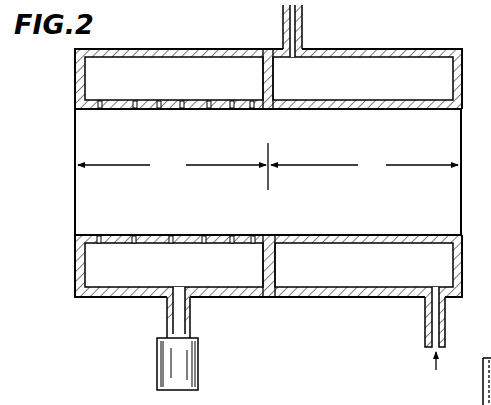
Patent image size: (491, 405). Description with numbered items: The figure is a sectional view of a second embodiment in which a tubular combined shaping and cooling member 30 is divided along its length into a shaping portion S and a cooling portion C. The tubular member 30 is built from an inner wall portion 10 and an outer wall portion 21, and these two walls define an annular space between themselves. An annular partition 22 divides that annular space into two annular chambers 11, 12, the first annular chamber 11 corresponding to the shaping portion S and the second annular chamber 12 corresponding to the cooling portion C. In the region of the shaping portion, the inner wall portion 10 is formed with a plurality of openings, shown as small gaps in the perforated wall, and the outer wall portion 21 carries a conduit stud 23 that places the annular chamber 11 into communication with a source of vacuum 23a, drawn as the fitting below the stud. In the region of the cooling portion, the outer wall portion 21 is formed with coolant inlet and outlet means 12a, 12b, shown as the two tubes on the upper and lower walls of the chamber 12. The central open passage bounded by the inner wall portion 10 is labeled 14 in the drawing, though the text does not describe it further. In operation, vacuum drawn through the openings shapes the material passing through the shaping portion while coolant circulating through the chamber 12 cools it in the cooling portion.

The inner wall portion 10 is at (174, 108).
The annular chamber 11 is at (177, 71).
The annular chamber 12 is at (366, 70).
The coolant inlet and outlet means 12a is at (428, 325).
The coolant inlet and outlet means 12b is at (302, 22).
The main chamber 14 is at (283, 172).
The outer wall portion 21 is at (268, 78).
The annular partition 22 is at (268, 296).
The conduit stud 23 is at (190, 315).
The source of vacuum 23a is at (182, 367).
The combined shaping and cooling member 30 is at (283, 197).